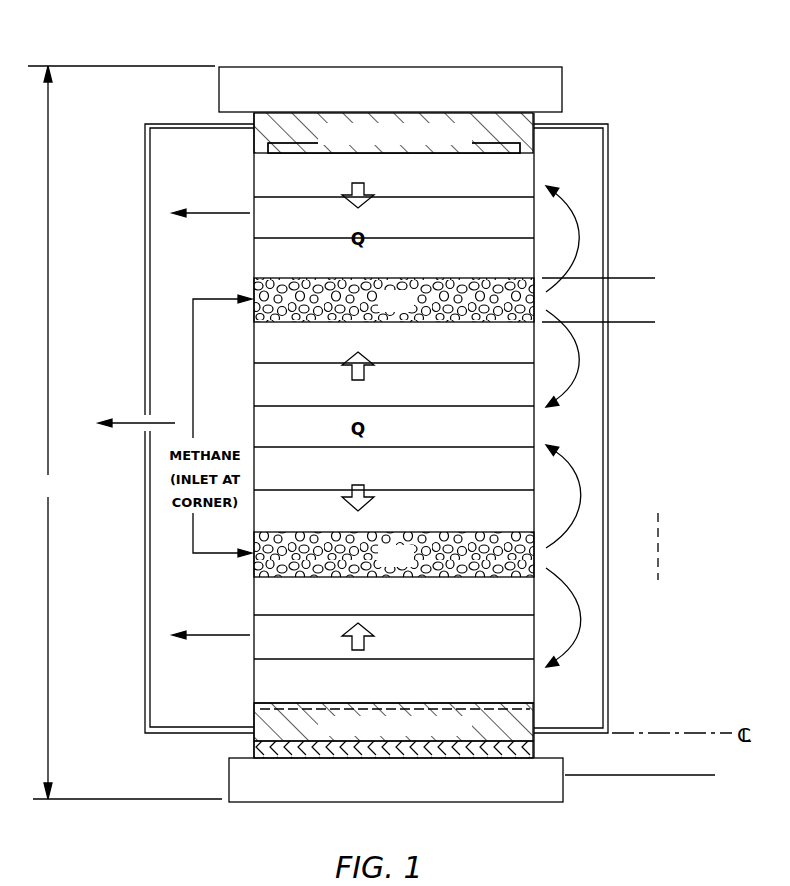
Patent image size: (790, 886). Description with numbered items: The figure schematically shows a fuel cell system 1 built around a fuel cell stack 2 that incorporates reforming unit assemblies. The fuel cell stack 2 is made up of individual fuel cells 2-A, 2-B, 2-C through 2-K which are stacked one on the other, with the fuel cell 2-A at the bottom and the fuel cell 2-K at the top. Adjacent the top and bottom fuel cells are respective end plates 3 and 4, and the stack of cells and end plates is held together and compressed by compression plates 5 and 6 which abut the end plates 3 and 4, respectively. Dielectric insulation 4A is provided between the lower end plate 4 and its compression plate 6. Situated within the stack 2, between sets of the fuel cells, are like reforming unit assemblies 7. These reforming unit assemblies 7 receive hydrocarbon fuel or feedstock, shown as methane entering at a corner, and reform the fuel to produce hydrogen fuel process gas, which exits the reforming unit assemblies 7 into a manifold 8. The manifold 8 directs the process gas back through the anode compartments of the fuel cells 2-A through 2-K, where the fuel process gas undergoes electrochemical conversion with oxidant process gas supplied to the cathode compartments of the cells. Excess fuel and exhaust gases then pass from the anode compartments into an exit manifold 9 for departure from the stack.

The fuel cell system 1 is at (574, 62).
The fuel cell stack 2 is at (573, 123).
The fuel cell 2-K is at (525, 171).
The fuel cell 2-C is at (525, 592).
The fuel cell 2-B is at (525, 638).
The fuel cell 2-A is at (525, 680).
The end plate 3 is at (256, 135).
The end plate 4 is at (256, 740).
The dielectric insulation 4A is at (256, 752).
The compression plate 5 is at (532, 74).
The compression plate 6 is at (545, 794).
The reforming unit assembly 7 is at (260, 305).
The manifold 8 is at (600, 406).
The exit manifold 9 is at (160, 248).